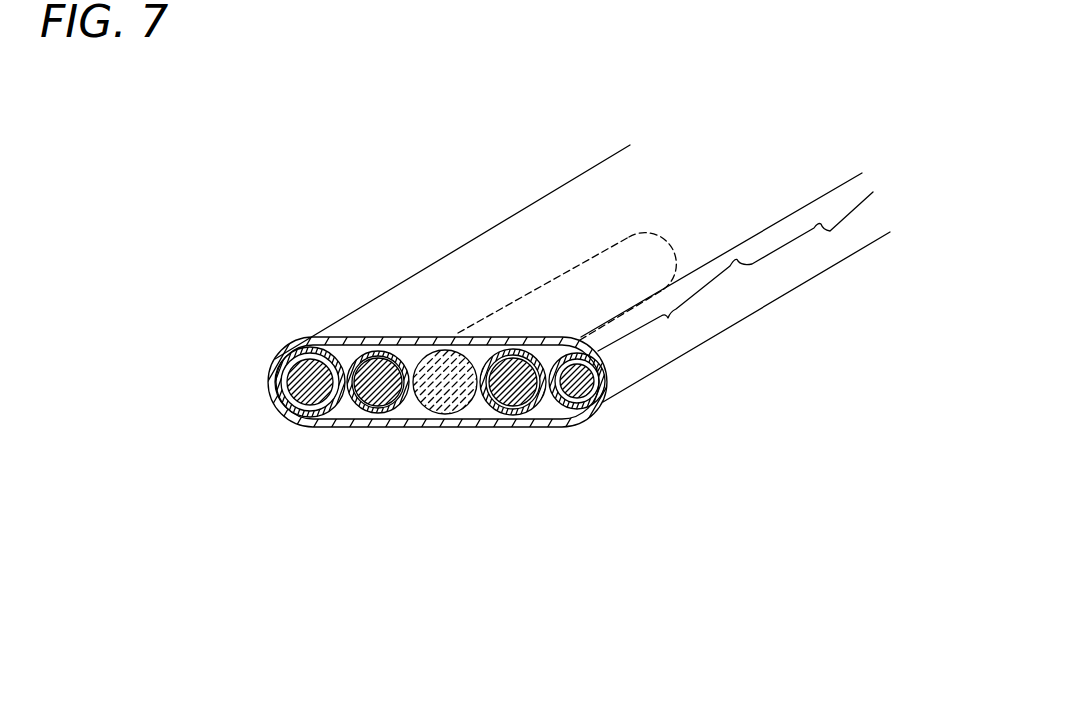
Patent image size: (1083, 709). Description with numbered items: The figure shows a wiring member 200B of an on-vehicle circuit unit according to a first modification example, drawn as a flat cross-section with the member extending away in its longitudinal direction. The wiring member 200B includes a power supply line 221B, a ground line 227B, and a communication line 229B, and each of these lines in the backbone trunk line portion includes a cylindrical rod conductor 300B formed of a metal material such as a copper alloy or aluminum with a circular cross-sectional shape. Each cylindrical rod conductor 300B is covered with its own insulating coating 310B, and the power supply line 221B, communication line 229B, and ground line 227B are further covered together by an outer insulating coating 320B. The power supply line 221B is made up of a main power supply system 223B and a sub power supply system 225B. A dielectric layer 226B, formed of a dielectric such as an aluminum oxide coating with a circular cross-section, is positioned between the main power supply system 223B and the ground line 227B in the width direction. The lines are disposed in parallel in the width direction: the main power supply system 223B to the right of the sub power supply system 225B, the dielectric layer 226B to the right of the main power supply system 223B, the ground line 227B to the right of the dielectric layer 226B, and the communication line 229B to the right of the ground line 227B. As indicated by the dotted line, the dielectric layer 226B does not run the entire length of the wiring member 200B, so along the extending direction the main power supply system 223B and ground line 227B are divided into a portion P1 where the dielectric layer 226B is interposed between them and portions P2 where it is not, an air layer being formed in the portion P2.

The wiring member 200B is at (755, 145).
The power supply line 221B is at (362, 483).
The main power supply system 223B is at (368, 417).
The sub power supply system 225B is at (293, 420).
The dielectric layer 226B is at (557, 277).
The ground line 227B is at (506, 418).
The communication line 229B is at (576, 416).
The cylindrical rod conductor 300B is at (580, 340).
The insulating coating 310B is at (335, 379).
The insulating coating 320B is at (273, 407).
The portion where the dielectric layer is interposed P1 is at (735, 271).
The portion where the dielectric layer is not interposed P2 is at (837, 249).